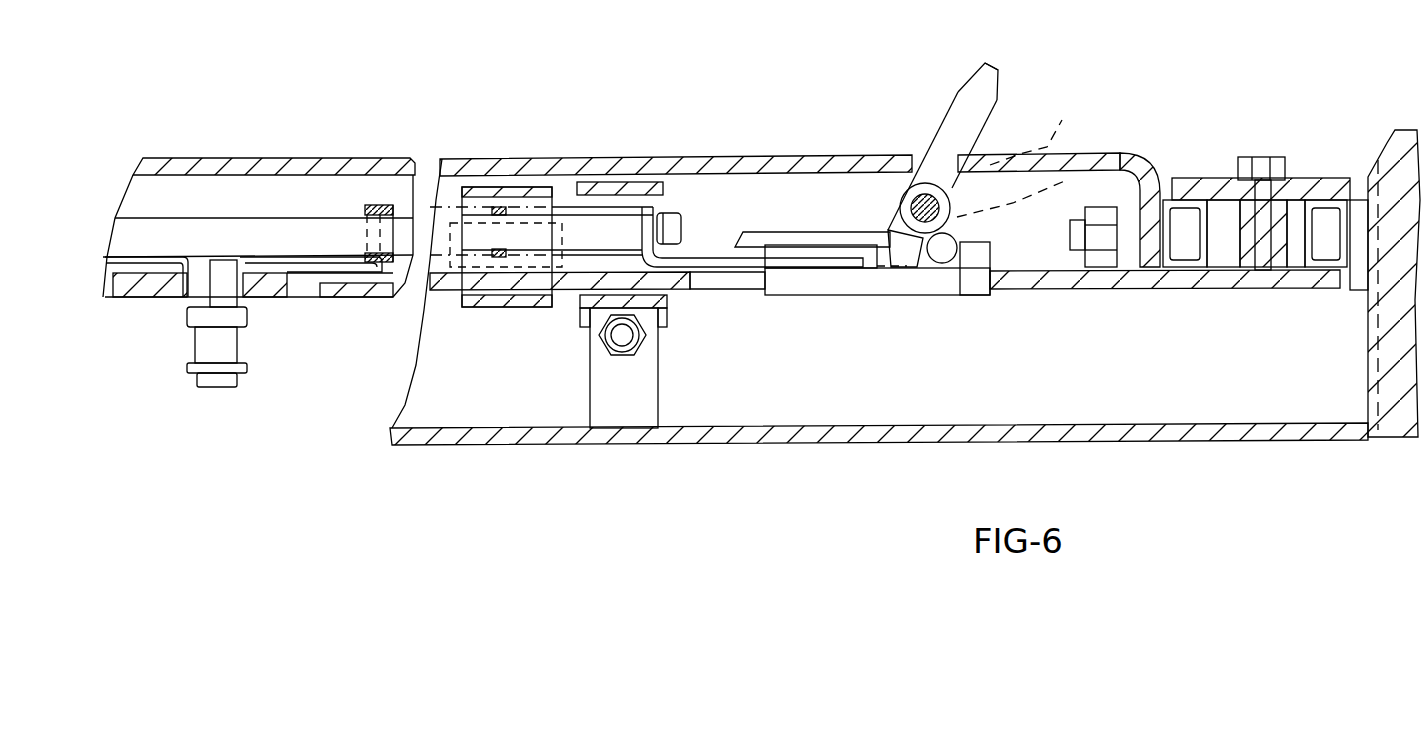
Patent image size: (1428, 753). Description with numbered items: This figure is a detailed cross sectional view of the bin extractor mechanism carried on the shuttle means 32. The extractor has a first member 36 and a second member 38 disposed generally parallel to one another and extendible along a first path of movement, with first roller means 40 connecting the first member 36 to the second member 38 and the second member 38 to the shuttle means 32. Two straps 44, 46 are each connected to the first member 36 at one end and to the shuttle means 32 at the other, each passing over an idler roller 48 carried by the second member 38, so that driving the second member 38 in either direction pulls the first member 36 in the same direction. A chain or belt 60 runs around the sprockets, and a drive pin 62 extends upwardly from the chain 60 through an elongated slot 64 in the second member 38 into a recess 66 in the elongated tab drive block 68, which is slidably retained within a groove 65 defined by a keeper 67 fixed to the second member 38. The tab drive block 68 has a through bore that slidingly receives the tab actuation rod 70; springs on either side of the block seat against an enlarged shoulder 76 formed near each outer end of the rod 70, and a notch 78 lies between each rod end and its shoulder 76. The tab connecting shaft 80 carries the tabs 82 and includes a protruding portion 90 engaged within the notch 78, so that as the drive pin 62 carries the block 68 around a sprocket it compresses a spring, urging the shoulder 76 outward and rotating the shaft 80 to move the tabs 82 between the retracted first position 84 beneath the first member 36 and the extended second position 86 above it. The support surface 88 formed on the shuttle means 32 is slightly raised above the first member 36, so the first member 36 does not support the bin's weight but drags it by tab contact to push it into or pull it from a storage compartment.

The shuttle means 32 is at (1250, 392).
The first member 36 is at (458, 160).
The second member 38 is at (1088, 290).
The first roller means 40 is at (1203, 183).
The strap 44 is at (595, 182).
The strap 46 is at (497, 187).
The idler roller 48 is at (555, 222).
The chain or belt 60 is at (193, 343).
The drive pin 62 is at (198, 303).
The elongated slot 64 is at (328, 288).
The groove 65 is at (728, 257).
The recess 66 is at (200, 262).
The keeper 67 is at (755, 232).
The tab drive block 68 is at (363, 207).
The tab actuation rod 70 is at (392, 205).
The enlarged shoulder 76 is at (683, 205).
The notch 78 is at (938, 296).
The tab connecting shaft 80 is at (887, 187).
The tab 82 is at (958, 100).
The first position 84 is at (1062, 120).
The second position 86 is at (998, 68).
The support surface 88 is at (1395, 130).
The protruding portion 90 is at (888, 230).